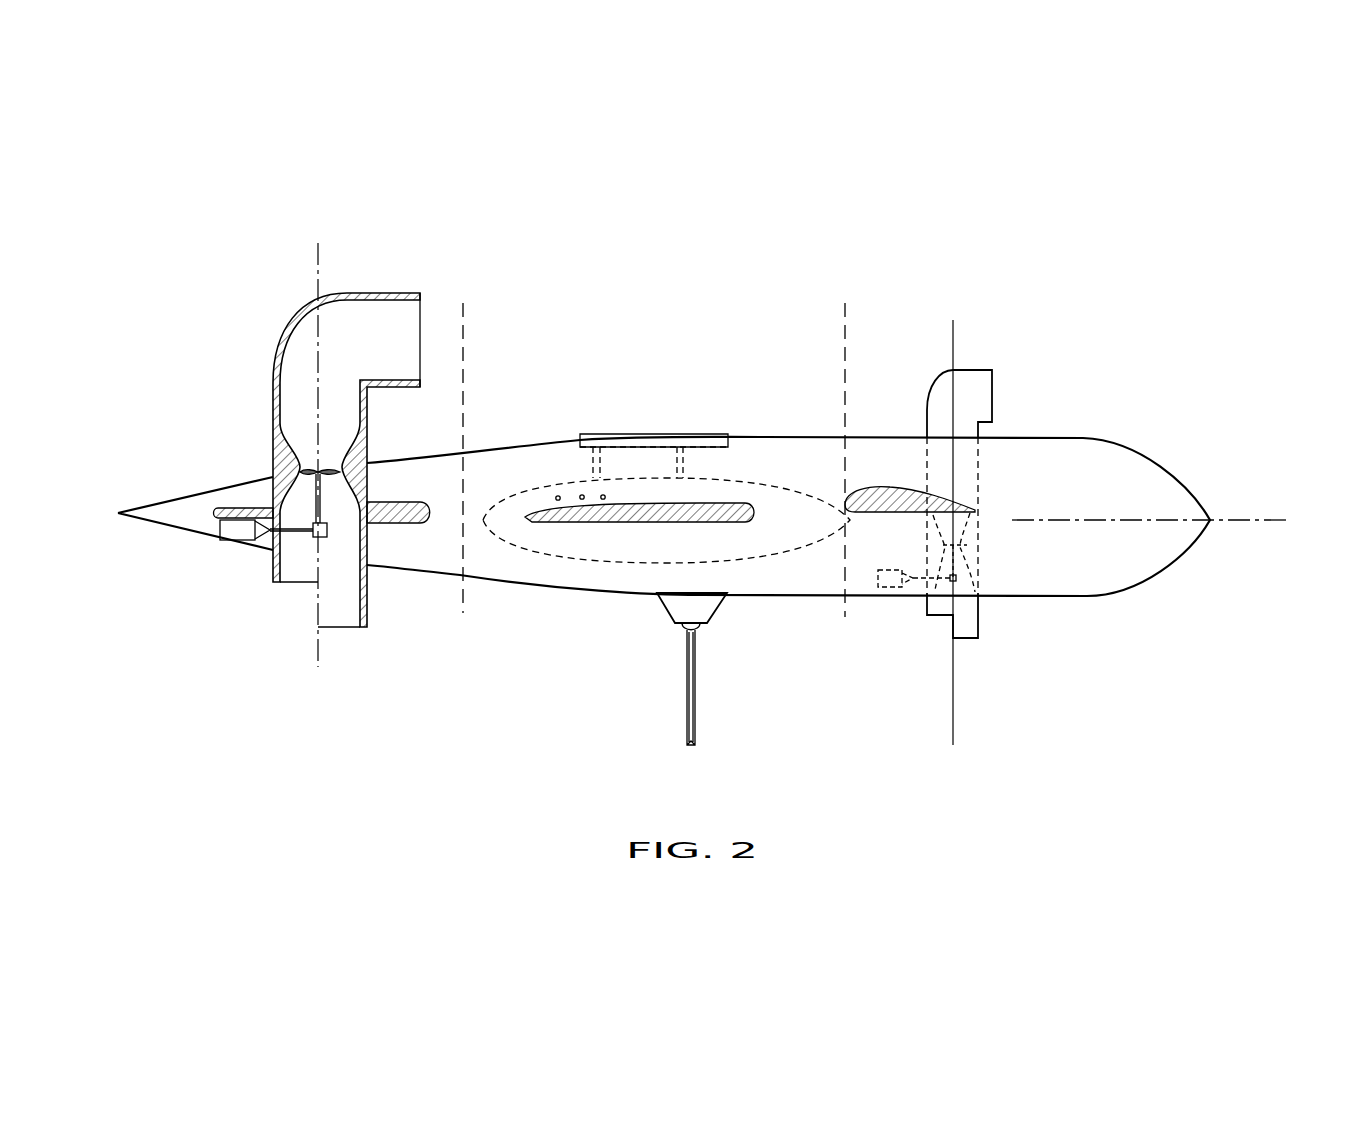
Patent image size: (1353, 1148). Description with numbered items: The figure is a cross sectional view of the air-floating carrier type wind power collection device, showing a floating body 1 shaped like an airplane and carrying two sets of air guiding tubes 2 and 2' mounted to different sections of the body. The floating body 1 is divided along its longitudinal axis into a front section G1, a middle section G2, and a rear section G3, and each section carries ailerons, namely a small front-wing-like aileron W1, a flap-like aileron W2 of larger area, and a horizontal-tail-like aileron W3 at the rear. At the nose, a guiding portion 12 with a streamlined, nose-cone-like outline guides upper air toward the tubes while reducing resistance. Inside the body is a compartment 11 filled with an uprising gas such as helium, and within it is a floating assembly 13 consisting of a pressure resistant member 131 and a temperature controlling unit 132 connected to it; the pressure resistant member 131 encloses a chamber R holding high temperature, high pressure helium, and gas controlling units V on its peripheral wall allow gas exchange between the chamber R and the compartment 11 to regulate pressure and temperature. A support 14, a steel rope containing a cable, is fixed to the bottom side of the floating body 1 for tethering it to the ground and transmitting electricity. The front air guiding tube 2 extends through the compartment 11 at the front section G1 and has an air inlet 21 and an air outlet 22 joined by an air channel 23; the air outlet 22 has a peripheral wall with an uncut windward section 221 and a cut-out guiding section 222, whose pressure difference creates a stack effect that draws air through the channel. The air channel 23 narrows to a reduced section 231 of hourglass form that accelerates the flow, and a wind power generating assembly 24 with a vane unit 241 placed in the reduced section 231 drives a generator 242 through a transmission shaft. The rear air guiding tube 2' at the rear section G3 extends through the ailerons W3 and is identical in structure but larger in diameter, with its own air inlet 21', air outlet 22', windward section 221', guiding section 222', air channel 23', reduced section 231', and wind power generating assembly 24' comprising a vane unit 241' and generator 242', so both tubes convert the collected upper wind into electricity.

The floating body 1 is at (1097, 597).
The compartment 11 is at (1137, 508).
The guiding portion 12 is at (1152, 448).
The floating assembly 13 is at (666, 368).
The pressure resistant member 131 is at (788, 497).
The temperature controlling unit 132 is at (677, 436).
The support 14 is at (688, 698).
The air guiding tube 2 is at (946, 493).
The air inlet 21 is at (1008, 371).
The air outlet 22 is at (980, 664).
The windward section 221 is at (1040, 658).
The guiding section 222 is at (897, 681).
The air channel 23 is at (1013, 504).
The reduced section 231 is at (1006, 574).
The wind power generating assembly 24 is at (879, 630).
The vane unit 241 is at (907, 602).
The generator 242 is at (871, 615).
The air guiding tube 2' is at (306, 489).
The air inlet 21' is at (391, 432).
The air outlet 22' is at (311, 669).
The windward section 221' is at (403, 674).
The guiding section 222' is at (230, 662).
The air channel 23' is at (233, 400).
The reduced section 231' is at (233, 434).
The wind power generating assembly 24' is at (221, 576).
The vane unit 241' is at (254, 565).
The generator 242' is at (201, 569).
The aileron W1 is at (885, 495).
The aileron W2 is at (612, 520).
The aileron W3 is at (404, 524).
The front section G1 is at (914, 287).
The middle section G2 is at (596, 285).
The rear section G3 is at (406, 243).
The gas controlling unit V is at (558, 494).
The chamber R is at (533, 542).